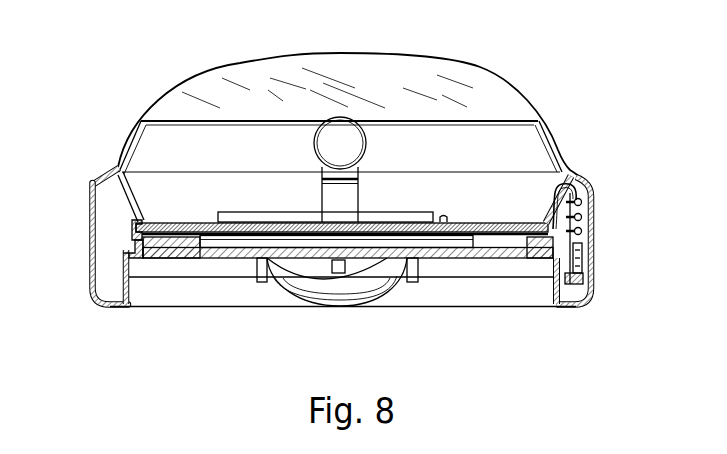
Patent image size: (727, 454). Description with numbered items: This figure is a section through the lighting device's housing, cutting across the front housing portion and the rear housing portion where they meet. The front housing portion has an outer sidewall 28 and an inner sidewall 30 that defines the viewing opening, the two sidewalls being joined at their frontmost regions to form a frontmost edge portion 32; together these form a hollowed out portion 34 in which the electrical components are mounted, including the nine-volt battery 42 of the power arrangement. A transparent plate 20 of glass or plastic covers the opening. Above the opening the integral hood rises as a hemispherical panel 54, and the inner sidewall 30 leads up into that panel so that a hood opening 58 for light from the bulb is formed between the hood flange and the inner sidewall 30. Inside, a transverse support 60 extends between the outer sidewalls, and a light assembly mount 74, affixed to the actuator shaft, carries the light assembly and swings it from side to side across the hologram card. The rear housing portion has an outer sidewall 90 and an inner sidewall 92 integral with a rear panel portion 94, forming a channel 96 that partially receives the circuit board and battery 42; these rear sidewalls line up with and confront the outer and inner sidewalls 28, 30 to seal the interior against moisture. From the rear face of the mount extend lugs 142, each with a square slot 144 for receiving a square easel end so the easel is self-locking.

The transparent plate 20 is at (470, 222).
The outer sidewall 28 is at (592, 232).
The inner sidewall 30 is at (550, 197).
The frontmost edge portion 32 is at (586, 167).
The hollowed out portion 34 is at (89, 185).
The 9-volt battery 42 is at (403, 214).
The hemispherical panel 54 is at (250, 78).
The hood opening 58 is at (433, 145).
The transverse support 60 is at (195, 203).
The light assembly mount 74 is at (325, 197).
The outer sidewall 90 is at (95, 302).
The inner sidewall 92 is at (130, 287).
The rear panel portion 94 is at (561, 307).
The channel 96 is at (577, 288).
The lugs 142 is at (320, 267).
The slot 144 is at (338, 268).